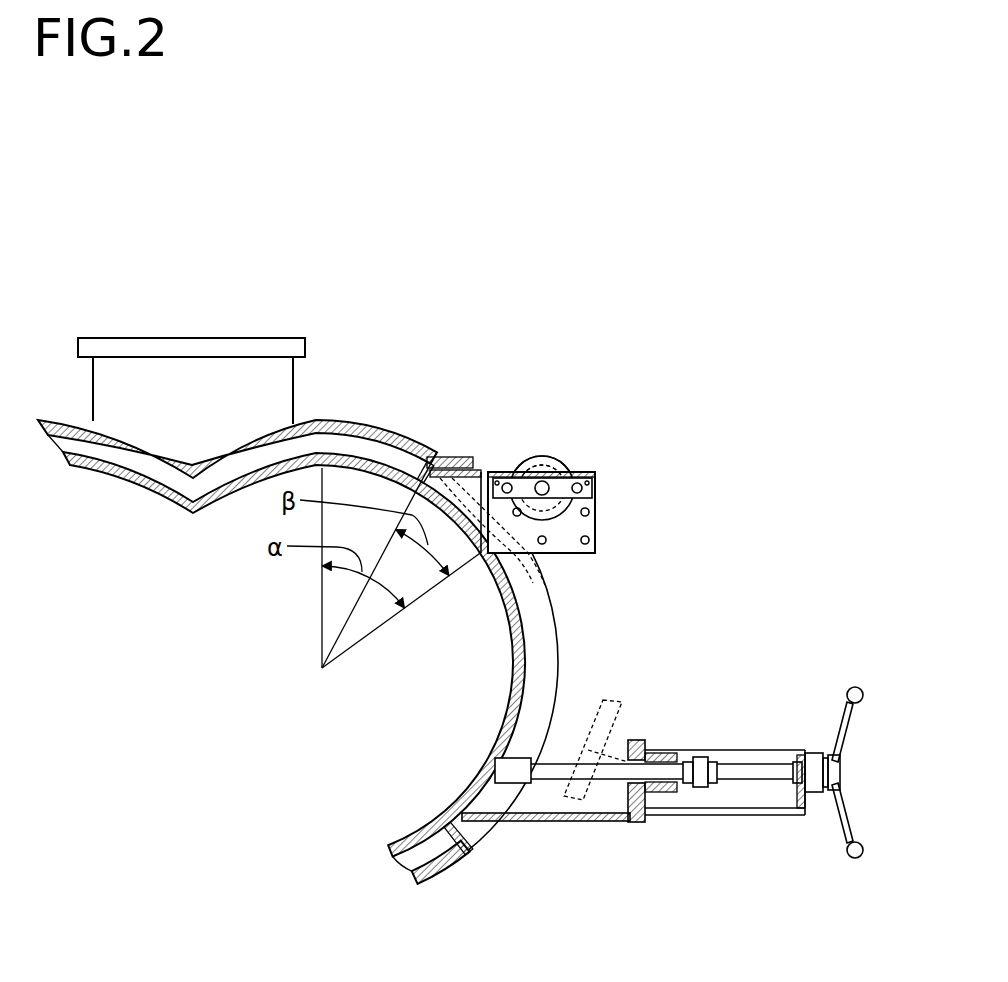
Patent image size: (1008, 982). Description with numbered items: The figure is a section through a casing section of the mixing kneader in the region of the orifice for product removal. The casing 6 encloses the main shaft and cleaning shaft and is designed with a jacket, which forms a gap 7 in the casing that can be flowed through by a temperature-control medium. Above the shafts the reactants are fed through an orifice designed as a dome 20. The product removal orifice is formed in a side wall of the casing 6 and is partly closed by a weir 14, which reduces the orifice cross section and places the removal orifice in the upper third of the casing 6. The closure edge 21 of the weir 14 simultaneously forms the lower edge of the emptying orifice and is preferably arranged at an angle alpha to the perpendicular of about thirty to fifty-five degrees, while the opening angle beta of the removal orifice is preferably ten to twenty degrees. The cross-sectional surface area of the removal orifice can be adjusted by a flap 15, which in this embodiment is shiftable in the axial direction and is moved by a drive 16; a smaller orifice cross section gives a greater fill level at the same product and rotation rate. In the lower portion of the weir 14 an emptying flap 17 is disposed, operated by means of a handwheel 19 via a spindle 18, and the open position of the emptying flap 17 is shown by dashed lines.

The casing 6 is at (556, 600).
The gap 7 is at (380, 450).
The weir 14 is at (525, 640).
The flap 15 is at (482, 470).
The drive 16 is at (550, 430).
The emptying flap 17 is at (522, 724).
The spindle 18 is at (741, 765).
The handwheel 19 is at (847, 712).
The dome 20 is at (295, 385).
The closure edge 21 is at (480, 556).